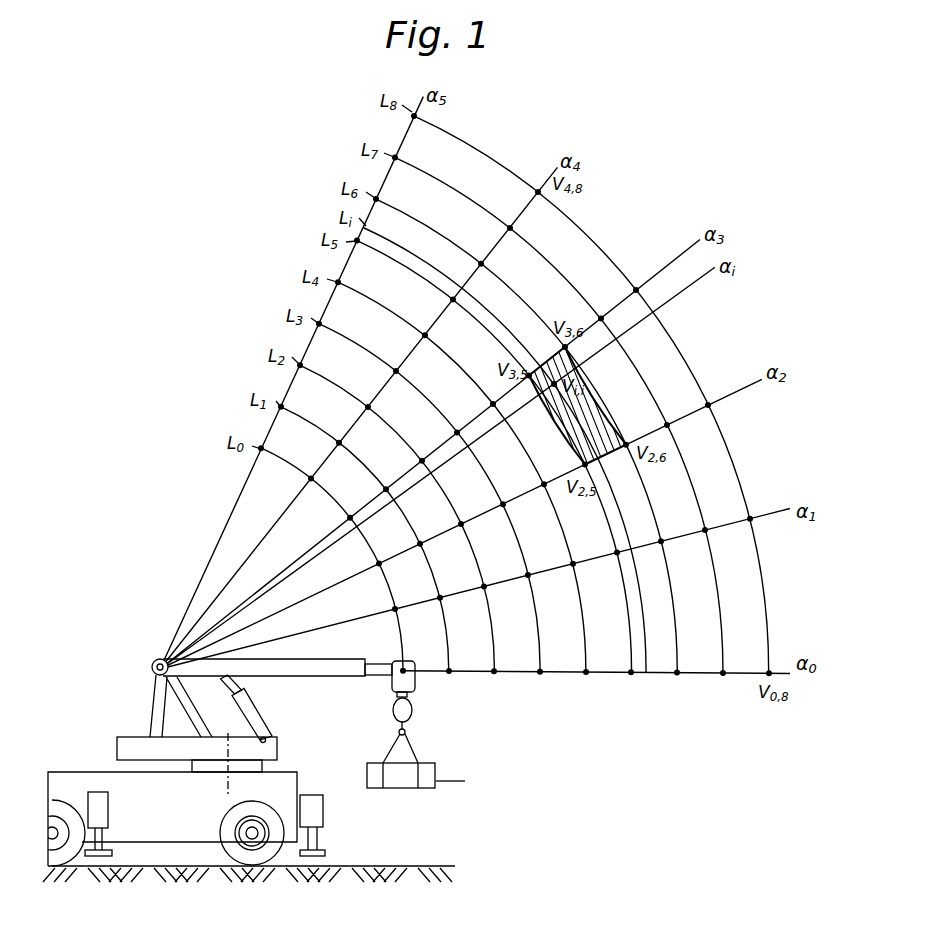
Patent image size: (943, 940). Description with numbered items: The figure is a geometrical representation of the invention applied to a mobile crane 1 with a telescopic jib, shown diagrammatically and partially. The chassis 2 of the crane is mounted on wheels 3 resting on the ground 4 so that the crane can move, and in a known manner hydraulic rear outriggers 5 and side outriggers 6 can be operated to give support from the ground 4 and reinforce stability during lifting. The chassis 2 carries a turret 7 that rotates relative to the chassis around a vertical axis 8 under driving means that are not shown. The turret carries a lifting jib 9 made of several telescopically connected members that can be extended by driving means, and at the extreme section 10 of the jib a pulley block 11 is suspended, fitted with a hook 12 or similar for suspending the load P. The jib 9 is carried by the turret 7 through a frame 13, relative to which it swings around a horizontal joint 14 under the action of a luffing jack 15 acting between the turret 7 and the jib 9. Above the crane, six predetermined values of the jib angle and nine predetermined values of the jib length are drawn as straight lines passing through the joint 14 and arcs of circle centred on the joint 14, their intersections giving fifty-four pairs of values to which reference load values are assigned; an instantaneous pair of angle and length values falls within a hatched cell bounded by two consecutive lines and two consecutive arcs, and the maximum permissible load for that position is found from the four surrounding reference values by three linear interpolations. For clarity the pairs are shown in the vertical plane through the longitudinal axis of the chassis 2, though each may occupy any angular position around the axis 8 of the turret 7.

The mobile crane 1 is at (88, 762).
The chassis 2 is at (195, 834).
The wheels 3 is at (76, 856).
The ground 4 is at (146, 880).
The hydraulic rear outriggers 5 is at (323, 811).
The side outriggers 6 is at (108, 808).
The turret 7 is at (119, 742).
The vertical axis 8 is at (231, 790).
The lifting jib 9 is at (313, 678).
The extreme section 10 is at (378, 679).
The pulley block 11 is at (412, 710).
The hook 12 is at (406, 735).
The frame 13 is at (153, 691).
The horizontal joint 14 is at (157, 662).
The luffing jack 15 is at (250, 722).